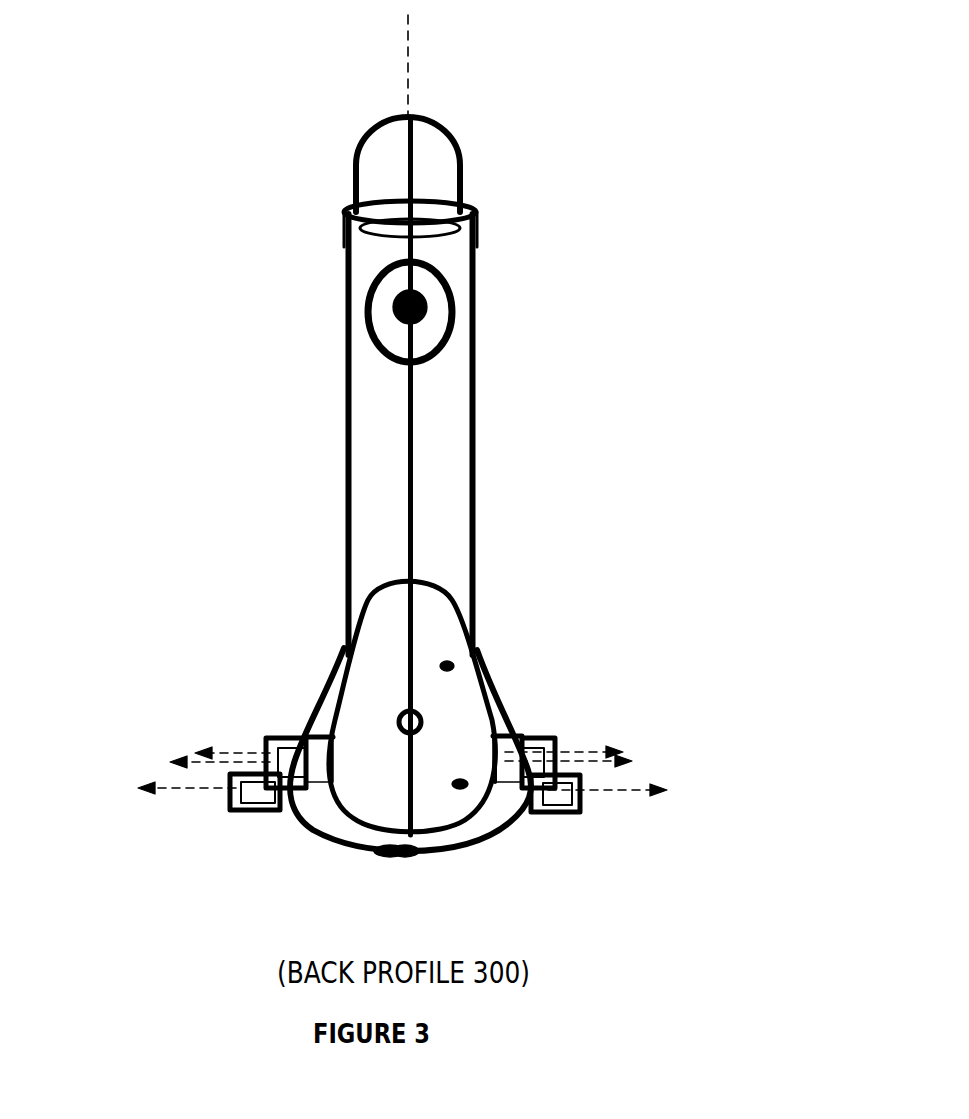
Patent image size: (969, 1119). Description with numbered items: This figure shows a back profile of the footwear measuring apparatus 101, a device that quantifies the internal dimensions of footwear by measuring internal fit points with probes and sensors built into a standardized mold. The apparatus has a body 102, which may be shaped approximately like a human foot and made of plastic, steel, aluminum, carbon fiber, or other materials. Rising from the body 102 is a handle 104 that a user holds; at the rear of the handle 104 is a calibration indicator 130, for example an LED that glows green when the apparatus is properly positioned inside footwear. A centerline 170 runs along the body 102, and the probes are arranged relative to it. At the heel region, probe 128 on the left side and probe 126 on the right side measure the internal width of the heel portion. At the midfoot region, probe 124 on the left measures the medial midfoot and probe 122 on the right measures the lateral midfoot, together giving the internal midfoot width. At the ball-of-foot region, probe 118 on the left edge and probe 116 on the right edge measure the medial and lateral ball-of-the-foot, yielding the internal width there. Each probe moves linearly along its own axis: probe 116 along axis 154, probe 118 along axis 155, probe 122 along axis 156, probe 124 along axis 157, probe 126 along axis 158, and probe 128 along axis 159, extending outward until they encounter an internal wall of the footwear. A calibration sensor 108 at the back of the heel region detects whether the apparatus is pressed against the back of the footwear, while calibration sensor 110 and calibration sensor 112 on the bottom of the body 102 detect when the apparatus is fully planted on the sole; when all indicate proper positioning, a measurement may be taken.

The footwear measuring apparatus 101 is at (582, 123).
The body 102 is at (372, 503).
The handle 104 is at (370, 283).
The calibration sensor 108 is at (400, 712).
The calibration sensor 110 is at (420, 856).
The calibration sensor 112 is at (375, 858).
The probe 116 is at (550, 800).
The probe 118 is at (250, 812).
The probe 122 is at (525, 738).
The probe 124 is at (268, 746).
The probe 126 is at (503, 735).
The probe 128 is at (304, 736).
The calibration indicator 130 is at (415, 303).
The axis 154 is at (645, 790).
The axis 155 is at (202, 790).
The axis 156 is at (633, 762).
The axis 157 is at (175, 762).
The axis 158 is at (590, 752).
The axis 159 is at (202, 750).
The centerline 170 is at (412, 50).